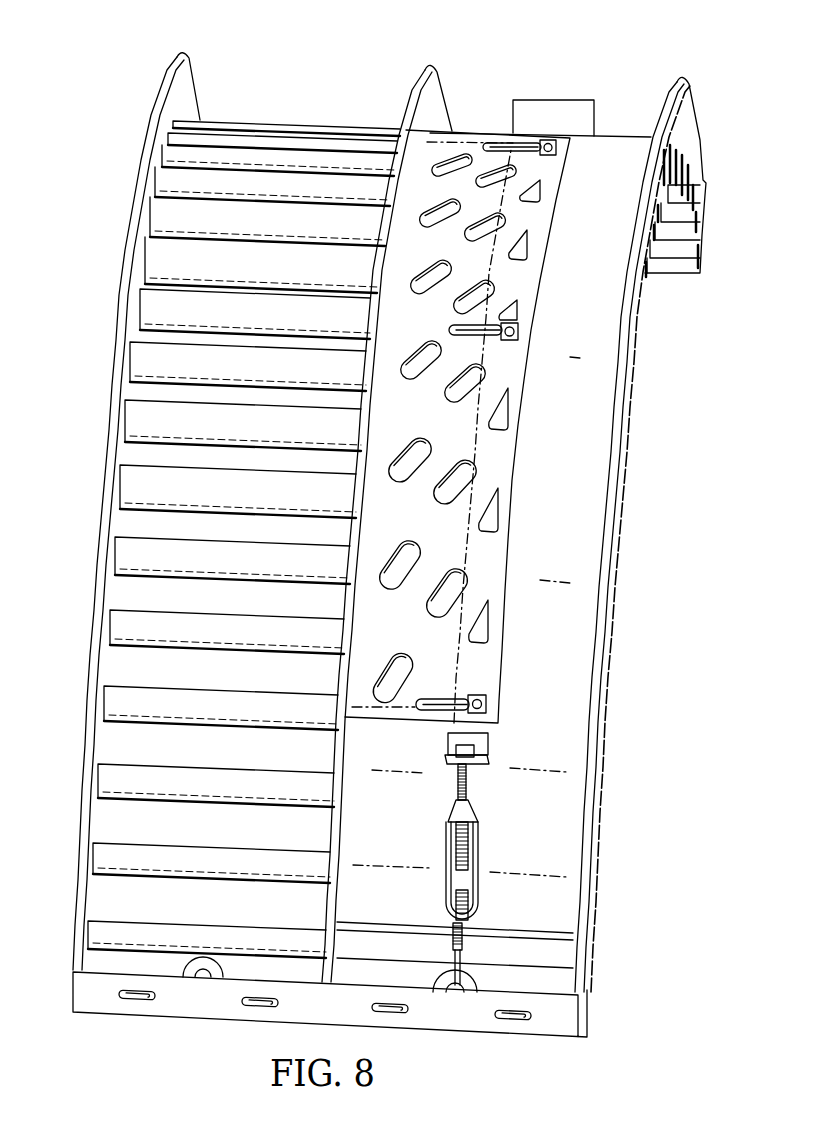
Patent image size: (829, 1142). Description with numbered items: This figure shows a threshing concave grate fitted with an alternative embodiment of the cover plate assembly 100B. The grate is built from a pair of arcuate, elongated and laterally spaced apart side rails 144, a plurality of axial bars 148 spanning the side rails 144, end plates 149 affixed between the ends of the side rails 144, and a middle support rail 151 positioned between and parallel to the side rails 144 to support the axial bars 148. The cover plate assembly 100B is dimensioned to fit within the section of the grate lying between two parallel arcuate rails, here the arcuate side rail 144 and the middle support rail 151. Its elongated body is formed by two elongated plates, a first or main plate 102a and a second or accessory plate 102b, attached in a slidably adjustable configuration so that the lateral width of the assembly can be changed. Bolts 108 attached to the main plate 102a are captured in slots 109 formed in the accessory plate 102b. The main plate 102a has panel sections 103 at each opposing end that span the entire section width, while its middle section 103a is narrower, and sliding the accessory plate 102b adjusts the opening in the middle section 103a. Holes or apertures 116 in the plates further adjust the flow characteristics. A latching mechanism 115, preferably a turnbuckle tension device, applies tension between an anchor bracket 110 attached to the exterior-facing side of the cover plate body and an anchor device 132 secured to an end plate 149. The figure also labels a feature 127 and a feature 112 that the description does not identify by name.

The cover plate assembly 100B is at (560, 788).
The main plate 102a is at (580, 512).
The accessory plate 102b is at (503, 463).
The panel sections 103 is at (470, 132).
The middle section 103a is at (593, 412).
The bolts 108 is at (524, 329).
The slots 109 is at (470, 336).
The anchor bracket 110 is at (488, 752).
The mounting block 112 is at (553, 100).
The latching mechanism 115 is at (478, 852).
The holes or apertures 116 is at (445, 266).
The slat conveyor assembly 127 is at (120, 208).
The anchor device 132 is at (483, 985).
The side rails 144 is at (174, 58).
The axial bars 148 is at (140, 428).
The end plates 149 is at (583, 1022).
The middle support rail 151 is at (422, 70).